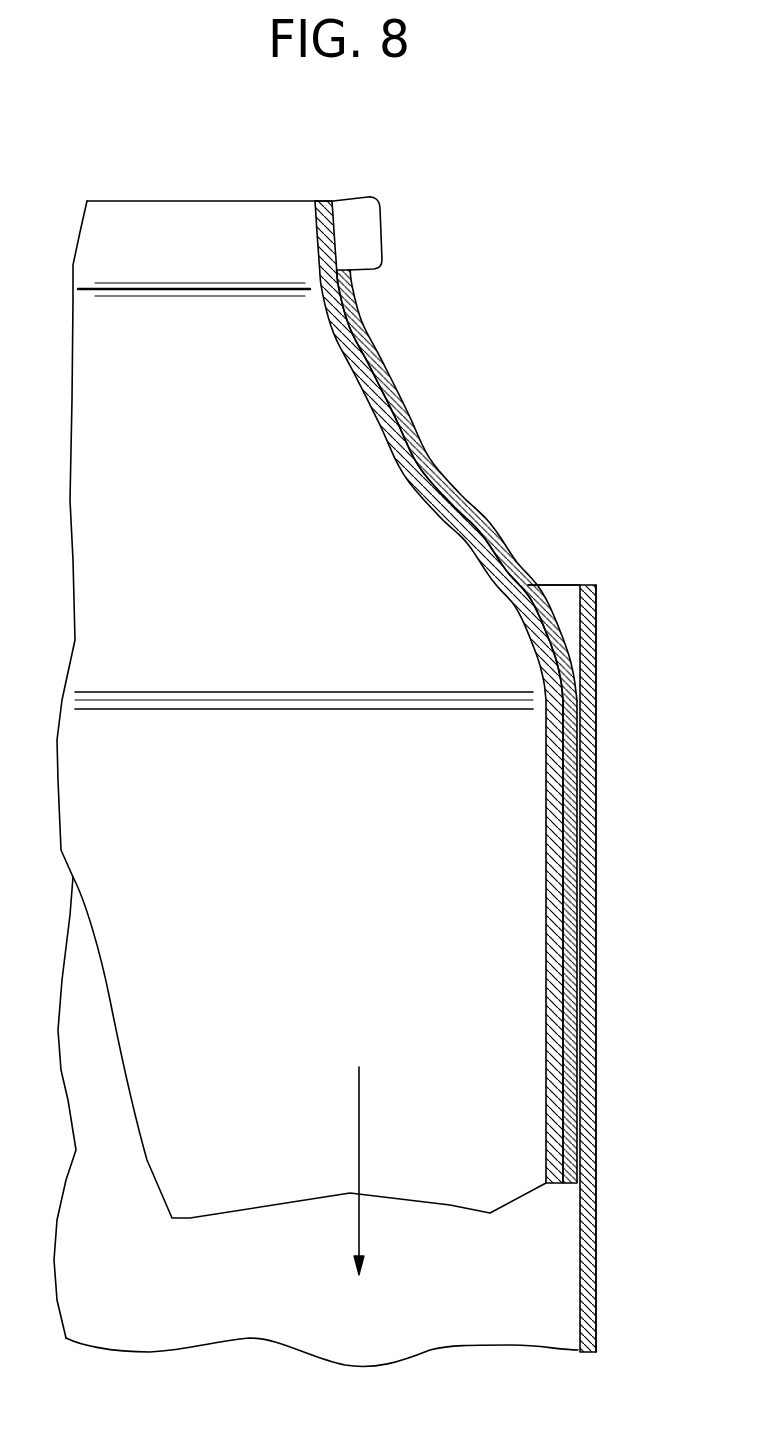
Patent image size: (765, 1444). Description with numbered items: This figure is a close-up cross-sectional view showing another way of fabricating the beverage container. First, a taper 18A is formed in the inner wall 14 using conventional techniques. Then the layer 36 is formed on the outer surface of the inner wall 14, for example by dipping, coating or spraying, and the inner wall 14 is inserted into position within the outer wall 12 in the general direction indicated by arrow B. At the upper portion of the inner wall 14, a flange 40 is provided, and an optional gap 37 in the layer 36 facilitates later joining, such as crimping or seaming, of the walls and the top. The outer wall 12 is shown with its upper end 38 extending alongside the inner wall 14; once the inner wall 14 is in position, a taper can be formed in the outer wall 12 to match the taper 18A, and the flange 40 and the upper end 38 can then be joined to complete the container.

The outer wall 12 is at (597, 635).
The inner wall 14 is at (385, 425).
The taper 18A is at (452, 393).
The layer 36 is at (450, 468).
The gap 37 is at (380, 228).
The upper end 38 is at (585, 585).
The flange 40 is at (319, 201).
The arrow B is at (357, 1112).